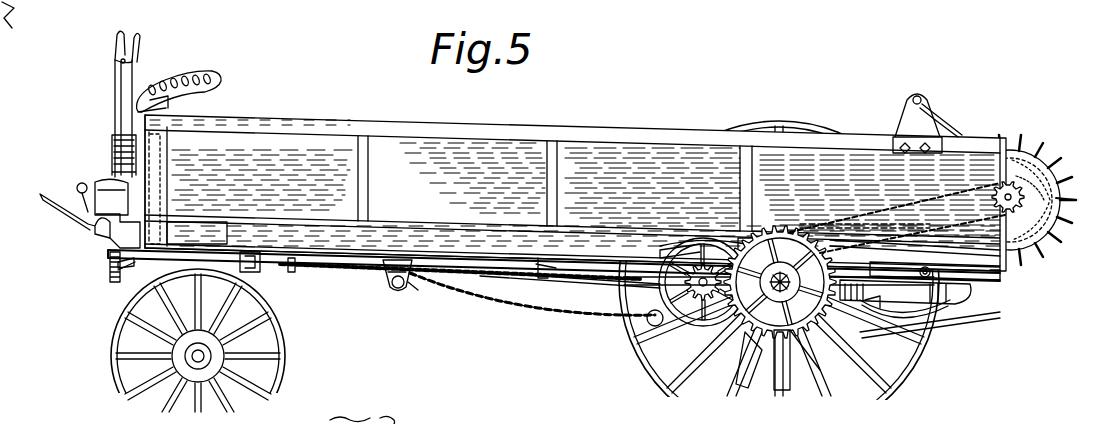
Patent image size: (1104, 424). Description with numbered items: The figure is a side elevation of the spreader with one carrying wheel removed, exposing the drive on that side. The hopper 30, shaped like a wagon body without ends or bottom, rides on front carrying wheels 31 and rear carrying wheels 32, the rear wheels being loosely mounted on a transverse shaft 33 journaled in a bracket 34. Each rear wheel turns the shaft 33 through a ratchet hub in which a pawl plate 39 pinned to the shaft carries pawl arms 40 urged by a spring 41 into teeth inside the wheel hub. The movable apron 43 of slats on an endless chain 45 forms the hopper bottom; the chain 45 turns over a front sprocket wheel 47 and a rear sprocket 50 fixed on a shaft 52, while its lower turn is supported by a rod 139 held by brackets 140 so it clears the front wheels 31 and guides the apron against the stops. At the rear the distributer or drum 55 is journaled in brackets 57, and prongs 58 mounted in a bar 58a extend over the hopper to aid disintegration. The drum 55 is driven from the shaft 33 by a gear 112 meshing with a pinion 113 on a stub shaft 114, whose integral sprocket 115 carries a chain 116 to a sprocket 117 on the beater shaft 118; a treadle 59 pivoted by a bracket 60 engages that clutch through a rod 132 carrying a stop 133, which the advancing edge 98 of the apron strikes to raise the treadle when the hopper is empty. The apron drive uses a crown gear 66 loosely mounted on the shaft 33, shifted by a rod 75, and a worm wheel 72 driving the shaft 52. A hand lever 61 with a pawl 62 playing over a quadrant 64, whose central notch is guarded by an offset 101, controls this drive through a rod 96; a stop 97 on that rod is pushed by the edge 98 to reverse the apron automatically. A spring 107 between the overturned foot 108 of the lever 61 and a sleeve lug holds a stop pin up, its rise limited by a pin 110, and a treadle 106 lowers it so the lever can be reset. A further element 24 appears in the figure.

The chain 24 is at (895, 211).
The hopper 30 is at (485, 128).
The front carrying wheels 31 is at (150, 292).
The rear carrying wheels 32 is at (795, 272).
The shaft 33 is at (915, 251).
The bracket 34 is at (744, 262).
The pawl plate 39 is at (756, 368).
The pawl arms 40 is at (786, 258).
The spring 41 is at (870, 322).
The movable apron 43 is at (905, 322).
The endless chain 45 is at (198, 256).
The sprocket wheel 47 is at (118, 226).
The sprocket 50 is at (962, 292).
The shaft 52 is at (998, 276).
The distributer or drum 55 is at (1046, 213).
The brackets 57 is at (1012, 190).
The prongs 58 is at (930, 120).
The bar 58a is at (920, 100).
The treadle 59 is at (80, 183).
The bracket 60 is at (130, 268).
The hand lever 61 is at (125, 88).
The pawl 62 is at (130, 180).
The quadrant 64 is at (110, 180).
The crown gear 66 is at (776, 366).
The worm wheel 72 is at (930, 318).
The rod 75 is at (935, 260).
The rod 96 is at (540, 272).
The stop 97 is at (298, 268).
The advancing edge of the apron 98 is at (620, 314).
The offset 101 is at (120, 193).
The treadle 106 is at (184, 233).
The spring 107 is at (109, 264).
The overturned foot 108 is at (116, 276).
The pin 110 is at (840, 224).
The gear 112 is at (862, 232).
The pinion 113 is at (690, 276).
The stub shaft 114 is at (648, 323).
The sprocket 115 is at (690, 252).
The chain 116 is at (662, 247).
The sprocket 117 is at (1032, 180).
The beater shaft 118 is at (1046, 196).
The rod 132 is at (580, 278).
The stop 133 is at (262, 270).
The rod 139 is at (412, 288).
The brackets 140 is at (388, 282).